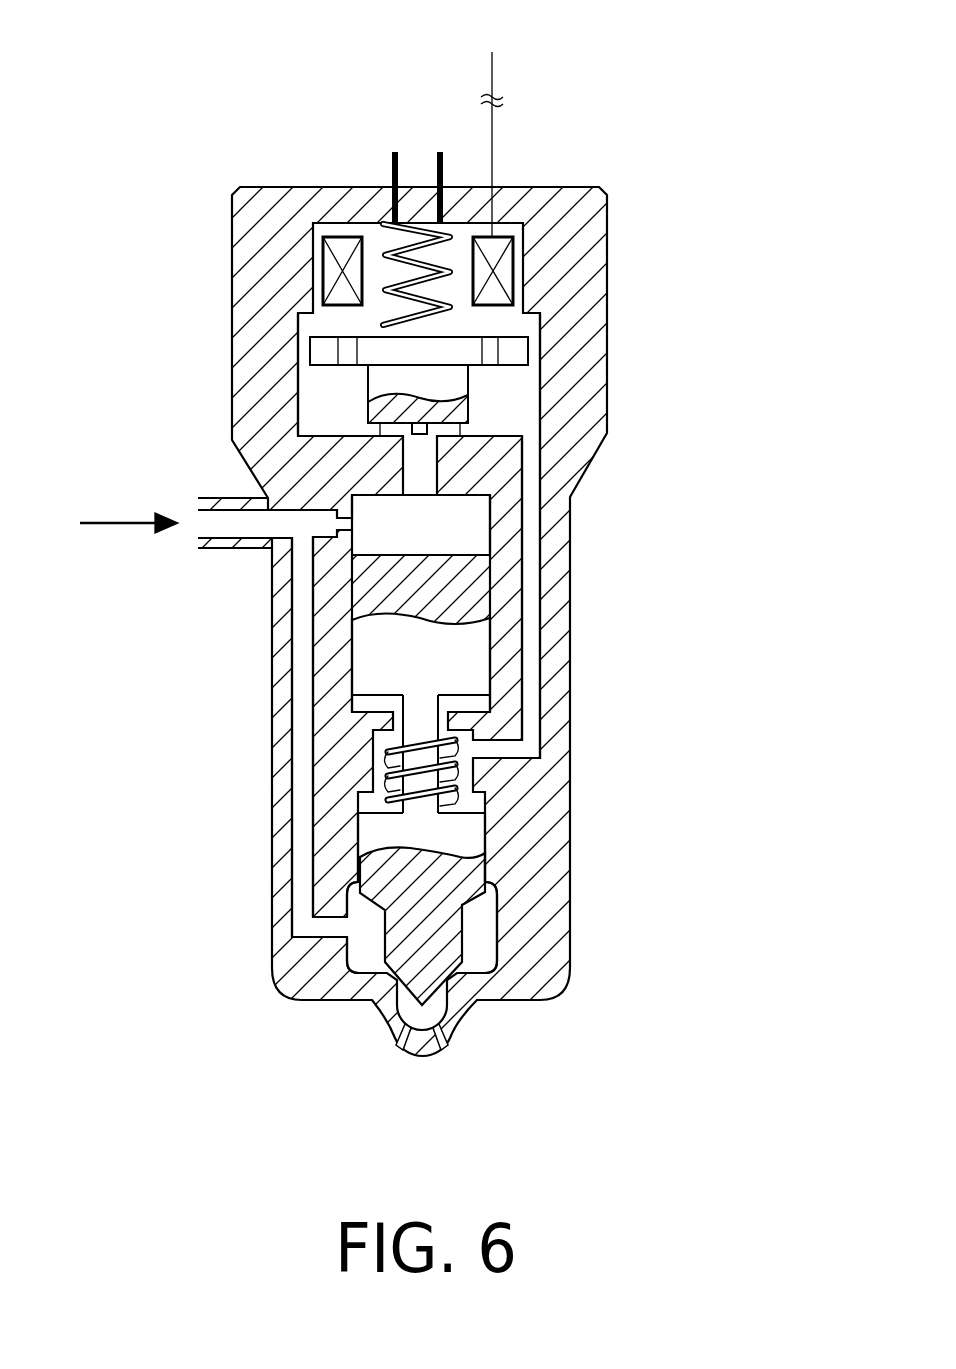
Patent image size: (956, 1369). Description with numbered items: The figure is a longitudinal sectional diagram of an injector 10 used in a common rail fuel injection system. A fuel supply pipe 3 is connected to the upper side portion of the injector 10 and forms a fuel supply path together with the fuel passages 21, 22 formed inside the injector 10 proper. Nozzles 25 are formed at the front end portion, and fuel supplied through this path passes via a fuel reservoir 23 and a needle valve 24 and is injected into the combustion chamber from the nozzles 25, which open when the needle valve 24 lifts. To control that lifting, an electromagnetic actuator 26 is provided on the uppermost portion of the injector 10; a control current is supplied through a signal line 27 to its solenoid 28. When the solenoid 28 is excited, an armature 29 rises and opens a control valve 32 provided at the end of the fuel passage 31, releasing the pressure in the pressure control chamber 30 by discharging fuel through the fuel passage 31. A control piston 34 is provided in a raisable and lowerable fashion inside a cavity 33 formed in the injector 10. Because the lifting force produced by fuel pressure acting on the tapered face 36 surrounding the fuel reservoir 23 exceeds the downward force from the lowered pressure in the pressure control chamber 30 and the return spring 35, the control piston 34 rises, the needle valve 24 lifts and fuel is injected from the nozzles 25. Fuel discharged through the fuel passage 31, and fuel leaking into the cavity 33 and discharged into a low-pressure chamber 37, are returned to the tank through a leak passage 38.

The injector 10 is at (645, 183).
The fuel supply pipe 3 is at (237, 548).
The fuel passage 21 is at (302, 522).
The fuel passage 22 is at (302, 603).
The fuel reservoir 23 is at (367, 950).
The needle valve 24 is at (455, 835).
The nozzles 25 is at (403, 1040).
The electromagnetic actuator 26 is at (374, 243).
The signal line 27 is at (493, 72).
The solenoid 28 is at (343, 268).
The armature 29 is at (443, 380).
The pressure control chamber 30 is at (438, 540).
The fuel passage 31 is at (420, 430).
The control valve 32 is at (338, 398).
The cavity 33 is at (473, 673).
The control piston 34 is at (452, 583).
The return spring 35 is at (395, 763).
The tapered face 36 is at (352, 923).
The low-pressure chamber 37 is at (530, 758).
The leak passage 38 is at (415, 163).